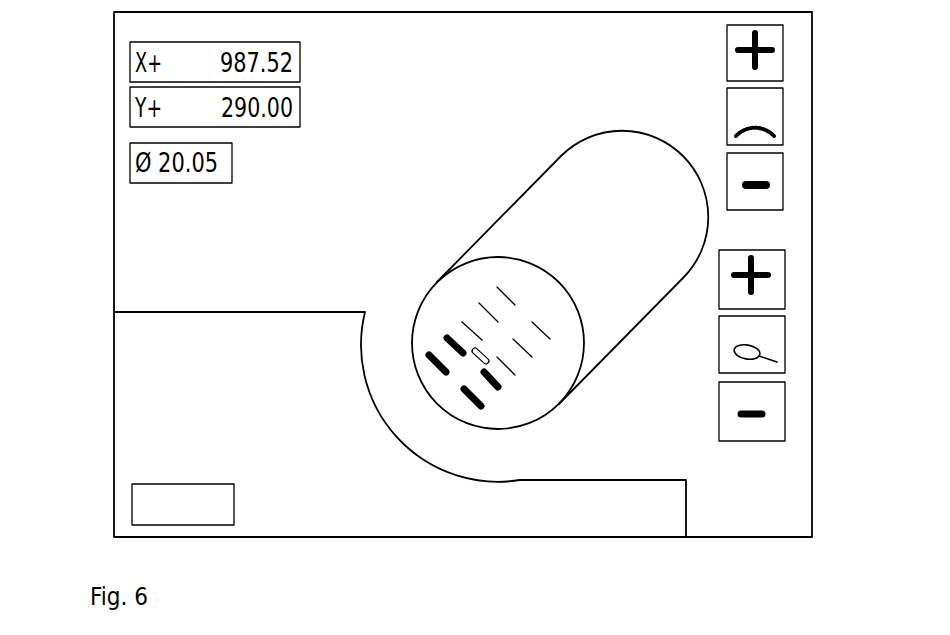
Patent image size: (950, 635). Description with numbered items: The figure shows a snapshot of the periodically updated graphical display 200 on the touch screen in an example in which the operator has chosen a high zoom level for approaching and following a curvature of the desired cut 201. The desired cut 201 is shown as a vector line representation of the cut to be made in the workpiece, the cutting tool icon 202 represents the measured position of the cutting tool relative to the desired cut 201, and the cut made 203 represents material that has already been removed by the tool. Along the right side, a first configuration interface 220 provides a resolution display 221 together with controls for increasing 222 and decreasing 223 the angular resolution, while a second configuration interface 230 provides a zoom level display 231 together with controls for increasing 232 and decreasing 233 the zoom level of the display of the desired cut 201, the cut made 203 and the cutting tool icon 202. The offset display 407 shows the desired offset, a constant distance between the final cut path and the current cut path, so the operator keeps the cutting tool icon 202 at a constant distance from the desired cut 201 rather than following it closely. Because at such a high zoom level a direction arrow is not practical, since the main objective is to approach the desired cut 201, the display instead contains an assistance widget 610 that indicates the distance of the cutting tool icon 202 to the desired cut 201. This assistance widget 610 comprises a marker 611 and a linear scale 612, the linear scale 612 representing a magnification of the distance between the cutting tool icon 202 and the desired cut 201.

The graphical display 200 is at (145, 268).
The desired cut 201 is at (686, 490).
The cutting tool icon 202 is at (442, 277).
The cut made 203 is at (554, 184).
The first configuration interface 220 is at (755, 117).
The resolution display 221 is at (784, 114).
The resolution increasing control 222 is at (784, 49).
The resolution decreasing control 223 is at (784, 182).
The second configuration interface 230 is at (762, 345).
The zoom level display 231 is at (786, 335).
The zoom level increasing control 232 is at (786, 273).
The zoom level decreasing control 233 is at (786, 395).
The offset display 407 is at (228, 509).
The assistance widget 610 is at (523, 328).
The marker 611 is at (484, 360).
The linear scale 612 is at (540, 342).